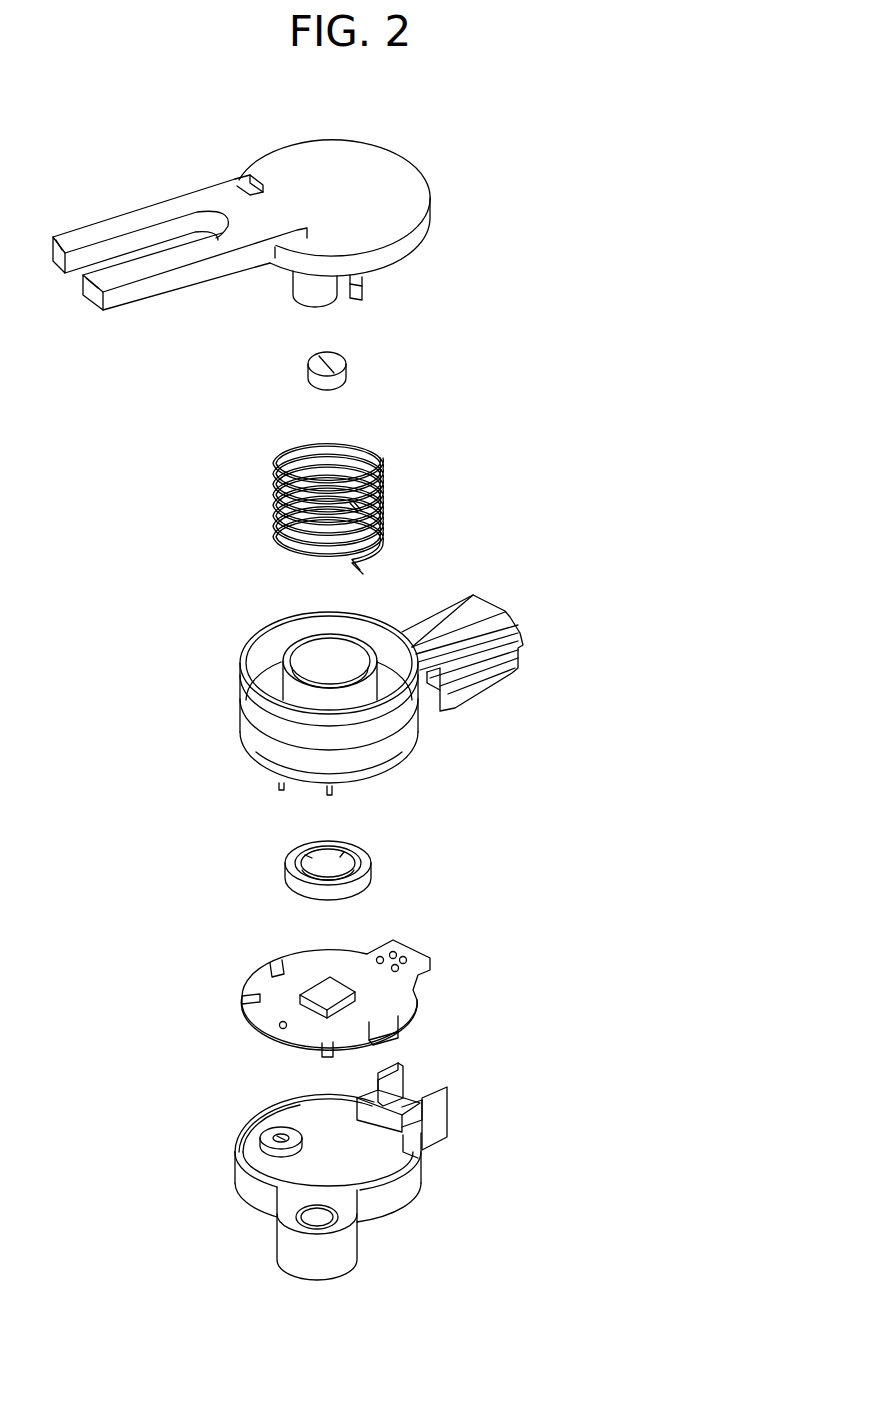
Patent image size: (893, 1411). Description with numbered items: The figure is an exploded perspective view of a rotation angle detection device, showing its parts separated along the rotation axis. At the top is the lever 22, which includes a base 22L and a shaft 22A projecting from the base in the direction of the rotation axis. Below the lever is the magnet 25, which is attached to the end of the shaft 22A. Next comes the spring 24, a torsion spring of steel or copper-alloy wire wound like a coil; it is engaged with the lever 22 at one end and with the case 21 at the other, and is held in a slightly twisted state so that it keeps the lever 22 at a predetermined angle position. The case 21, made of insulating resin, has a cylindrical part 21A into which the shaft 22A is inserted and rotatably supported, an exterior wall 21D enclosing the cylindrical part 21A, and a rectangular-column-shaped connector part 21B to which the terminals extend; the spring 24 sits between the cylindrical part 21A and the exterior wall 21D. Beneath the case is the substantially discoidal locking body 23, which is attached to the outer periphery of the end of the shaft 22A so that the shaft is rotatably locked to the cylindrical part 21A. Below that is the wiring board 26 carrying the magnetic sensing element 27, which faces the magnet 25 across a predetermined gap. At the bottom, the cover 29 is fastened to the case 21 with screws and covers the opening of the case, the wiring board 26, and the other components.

The case 21 is at (367, 660).
The cylindrical part 21A is at (305, 650).
The connector part 21B is at (467, 692).
The exterior wall 21D is at (250, 712).
The lever 22 is at (272, 228).
The base 22L is at (198, 198).
The shaft 22A is at (362, 290).
The locking body 23 is at (363, 860).
The spring 24 is at (383, 503).
The magnet 25 is at (310, 363).
The wiring board 26 is at (355, 986).
The magnetic sensing element 27 is at (322, 995).
The cover 29 is at (408, 1192).